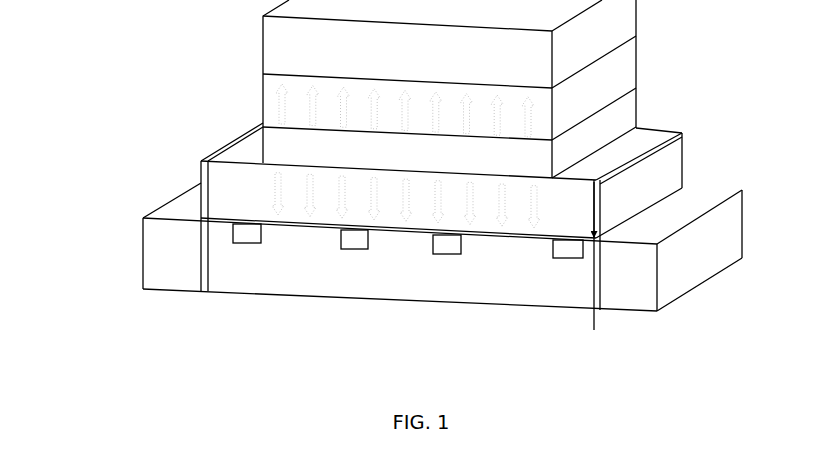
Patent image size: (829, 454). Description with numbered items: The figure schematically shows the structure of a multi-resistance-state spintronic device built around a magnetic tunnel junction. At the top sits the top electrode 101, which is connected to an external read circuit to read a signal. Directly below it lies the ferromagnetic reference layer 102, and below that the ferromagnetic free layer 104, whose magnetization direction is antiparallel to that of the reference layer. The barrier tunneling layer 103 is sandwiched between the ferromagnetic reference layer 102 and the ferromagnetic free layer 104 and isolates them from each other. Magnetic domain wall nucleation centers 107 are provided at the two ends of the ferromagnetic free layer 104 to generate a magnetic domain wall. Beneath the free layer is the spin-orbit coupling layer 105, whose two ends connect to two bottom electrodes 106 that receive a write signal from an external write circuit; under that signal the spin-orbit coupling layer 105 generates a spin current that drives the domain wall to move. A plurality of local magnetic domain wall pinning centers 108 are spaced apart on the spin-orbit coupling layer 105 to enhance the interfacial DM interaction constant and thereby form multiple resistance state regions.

The top electrode 101 is at (275, 38).
The ferromagnetic reference layer 102 is at (275, 95).
The barrier tunneling layer 103 is at (275, 139).
The ferromagnetic free layer 104 is at (262, 183).
The spin-orbit coupling layer 105 is at (219, 236).
The bottom electrode 106 is at (150, 273).
The magnetic domain wall nucleation center 107 is at (204, 219).
The local magnetic domain wall pinning center 108 is at (551, 259).